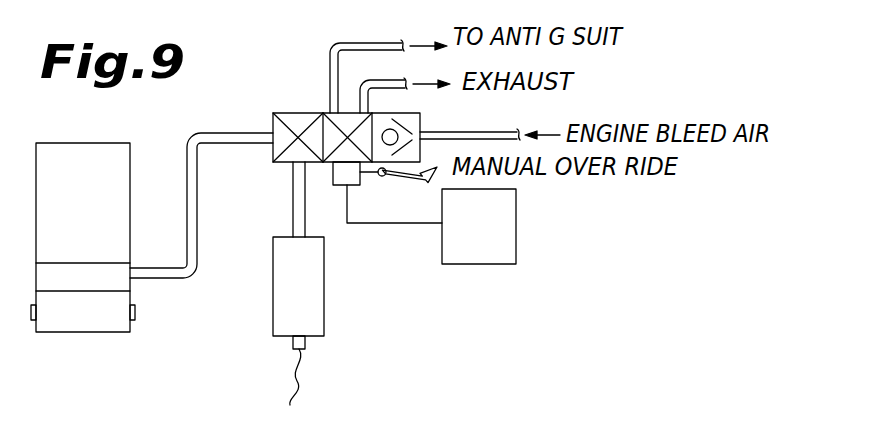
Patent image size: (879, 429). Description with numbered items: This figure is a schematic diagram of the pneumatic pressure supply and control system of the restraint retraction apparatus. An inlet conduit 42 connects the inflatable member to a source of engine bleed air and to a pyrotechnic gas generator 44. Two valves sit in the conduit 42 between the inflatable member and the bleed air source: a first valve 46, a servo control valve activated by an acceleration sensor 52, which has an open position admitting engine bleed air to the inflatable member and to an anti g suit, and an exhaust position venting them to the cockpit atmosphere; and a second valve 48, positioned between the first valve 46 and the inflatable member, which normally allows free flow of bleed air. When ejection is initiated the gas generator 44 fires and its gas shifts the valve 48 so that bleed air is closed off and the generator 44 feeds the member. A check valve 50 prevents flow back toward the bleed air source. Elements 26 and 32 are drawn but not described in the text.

The pressure vessel / reservoir 26 is at (100, 218).
The mounting tabs 32 is at (136, 308).
The inlet conduit 42 is at (193, 266).
The pyrotechnic gas generator 44 is at (324, 322).
The first valve 46 is at (345, 112).
The second valve 48 is at (273, 113).
The check valve 50 is at (420, 119).
The acceleration sensor 52 is at (496, 240).